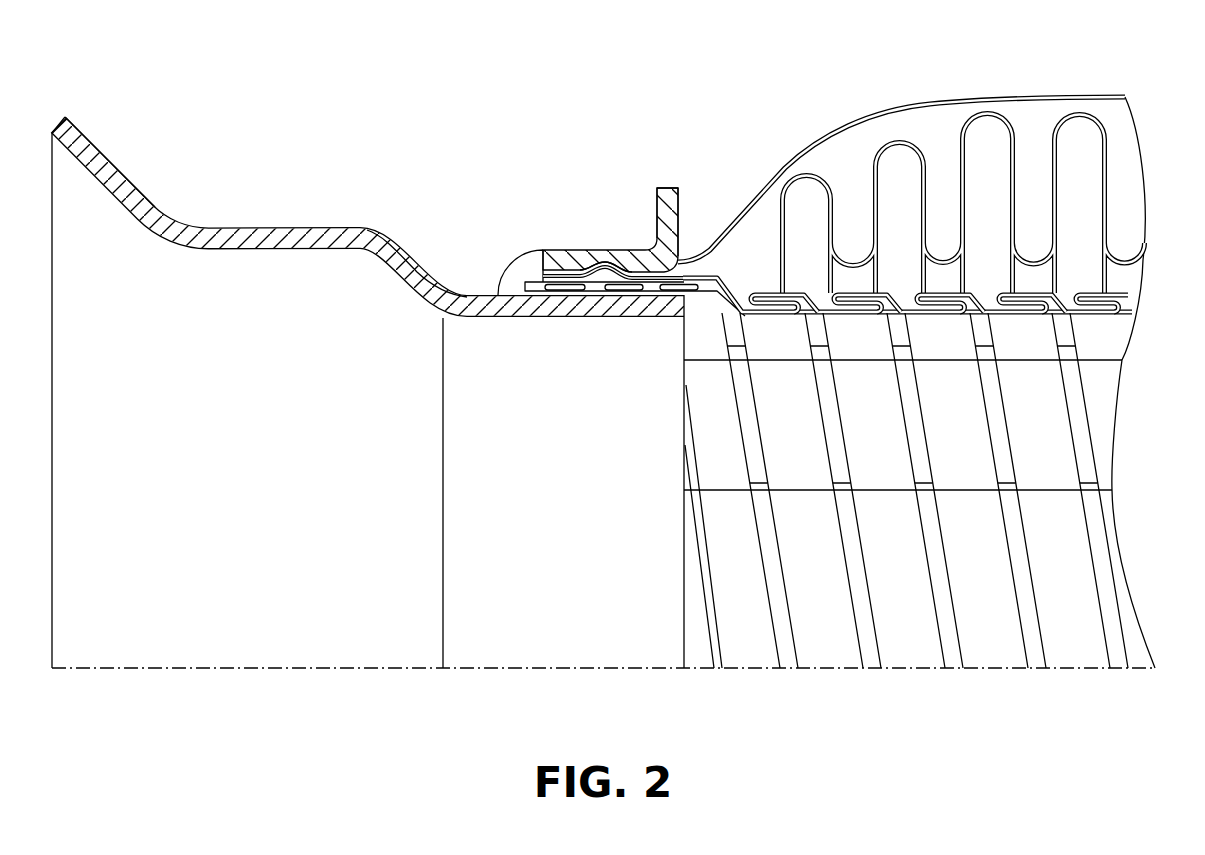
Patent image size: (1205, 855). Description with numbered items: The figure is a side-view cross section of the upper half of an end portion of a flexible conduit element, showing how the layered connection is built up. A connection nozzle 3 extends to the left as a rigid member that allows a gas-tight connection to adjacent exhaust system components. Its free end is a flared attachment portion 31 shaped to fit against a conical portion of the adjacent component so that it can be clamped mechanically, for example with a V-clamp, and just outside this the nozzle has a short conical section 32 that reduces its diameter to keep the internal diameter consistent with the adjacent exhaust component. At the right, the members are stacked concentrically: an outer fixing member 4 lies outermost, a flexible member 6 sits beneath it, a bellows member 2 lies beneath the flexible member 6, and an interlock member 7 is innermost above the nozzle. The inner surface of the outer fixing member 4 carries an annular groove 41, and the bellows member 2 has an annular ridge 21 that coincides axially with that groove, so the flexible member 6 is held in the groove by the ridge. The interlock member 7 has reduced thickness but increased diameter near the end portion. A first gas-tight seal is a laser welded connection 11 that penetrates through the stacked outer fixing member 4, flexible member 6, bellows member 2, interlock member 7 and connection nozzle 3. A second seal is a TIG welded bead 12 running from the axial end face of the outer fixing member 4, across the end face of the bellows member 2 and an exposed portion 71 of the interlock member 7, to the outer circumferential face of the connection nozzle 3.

The bellows member 2 is at (1108, 139).
The connection nozzle 3 is at (283, 226).
The outer fixing member 4 is at (593, 249).
The flexible member 6 is at (1066, 96).
The interlock member 7 is at (1120, 298).
The laser welded connection 11 is at (571, 240).
The TIG welded bead 12 is at (502, 254).
The annular ridge 21 is at (598, 283).
The attachment portion 31 is at (120, 204).
The short conical section 32 is at (398, 278).
The annular groove 41 is at (605, 262).
The exposed portion 71 is at (671, 292).